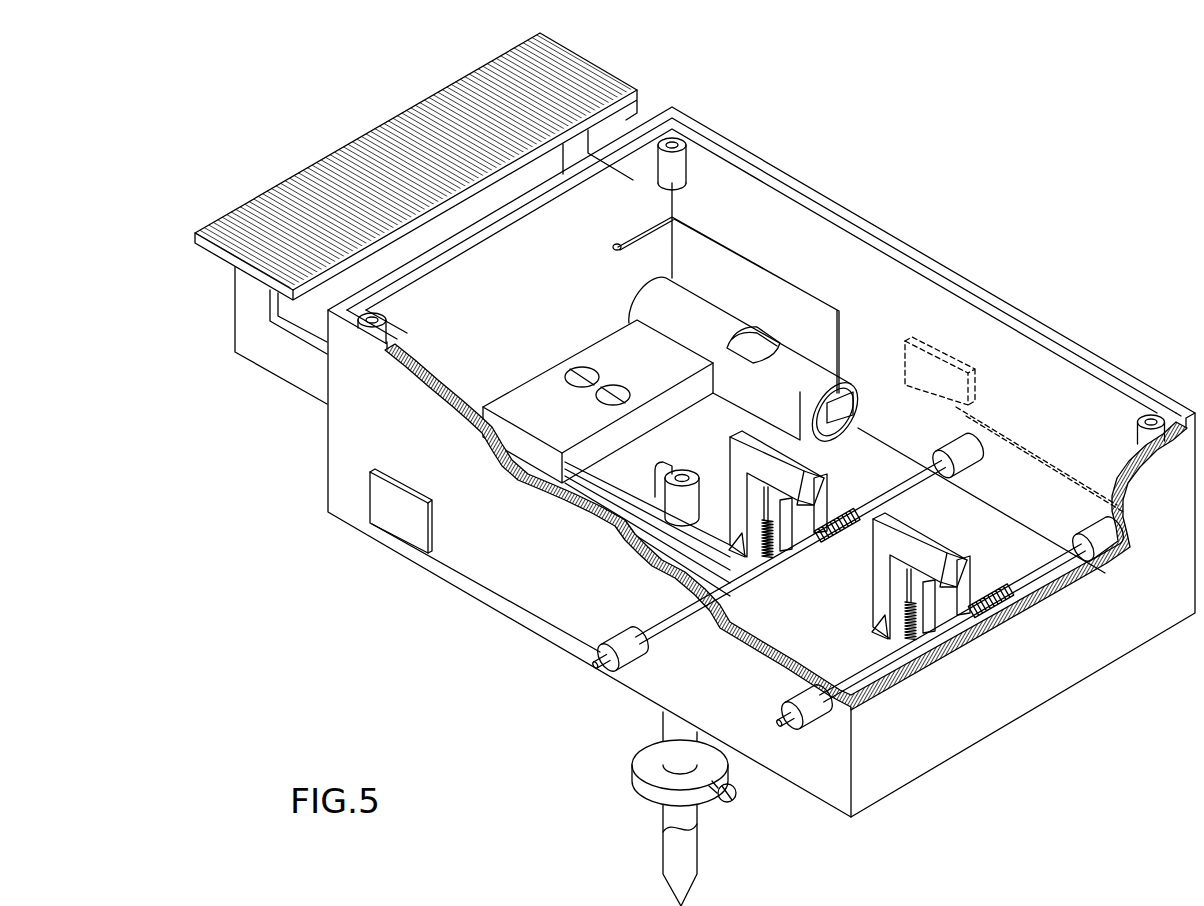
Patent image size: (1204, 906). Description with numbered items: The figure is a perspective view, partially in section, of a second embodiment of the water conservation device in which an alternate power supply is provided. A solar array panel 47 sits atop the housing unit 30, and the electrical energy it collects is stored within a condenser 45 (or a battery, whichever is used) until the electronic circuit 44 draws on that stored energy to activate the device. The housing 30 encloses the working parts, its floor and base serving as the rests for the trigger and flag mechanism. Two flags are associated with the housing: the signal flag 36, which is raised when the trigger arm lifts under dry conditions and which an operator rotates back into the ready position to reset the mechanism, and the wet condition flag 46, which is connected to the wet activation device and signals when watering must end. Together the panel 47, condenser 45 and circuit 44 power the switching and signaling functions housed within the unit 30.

The housing unit 30 is at (533, 565).
The signal flag 36 is at (395, 527).
The electronic circuit 44 is at (547, 422).
The condenser 45 is at (837, 310).
The wet condition flag 46 is at (940, 345).
The solar array panel 47 is at (642, 88).